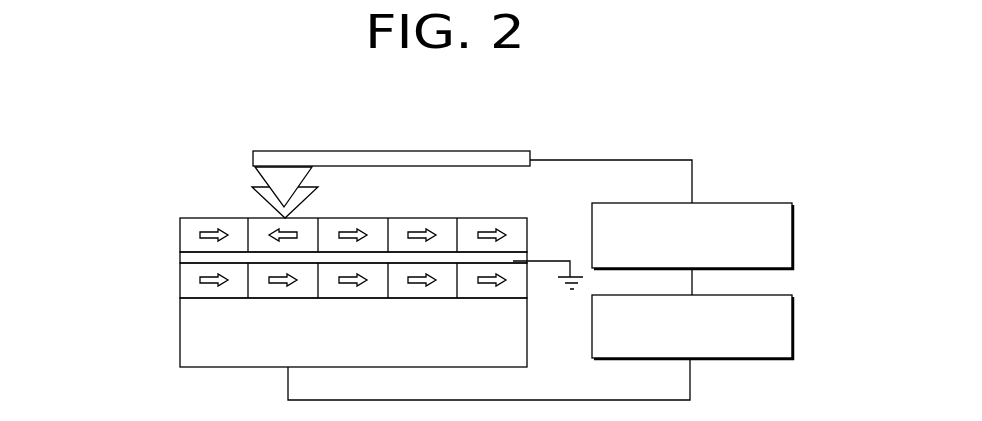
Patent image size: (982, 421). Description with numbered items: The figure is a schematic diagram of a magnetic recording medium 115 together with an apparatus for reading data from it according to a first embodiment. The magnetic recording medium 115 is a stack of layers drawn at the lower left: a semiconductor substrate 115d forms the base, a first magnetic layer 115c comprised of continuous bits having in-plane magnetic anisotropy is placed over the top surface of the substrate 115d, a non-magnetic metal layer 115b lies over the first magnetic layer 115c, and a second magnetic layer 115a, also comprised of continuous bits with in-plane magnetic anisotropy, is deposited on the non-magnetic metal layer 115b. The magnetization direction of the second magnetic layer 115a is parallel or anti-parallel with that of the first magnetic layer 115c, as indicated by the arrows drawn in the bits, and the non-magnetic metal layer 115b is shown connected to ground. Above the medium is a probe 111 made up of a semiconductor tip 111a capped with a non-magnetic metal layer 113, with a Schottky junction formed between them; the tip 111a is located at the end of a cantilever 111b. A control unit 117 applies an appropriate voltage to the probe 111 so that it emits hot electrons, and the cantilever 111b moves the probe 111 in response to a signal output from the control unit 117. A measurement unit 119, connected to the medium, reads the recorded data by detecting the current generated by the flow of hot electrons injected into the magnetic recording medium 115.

The probe 111 is at (341, 154).
The semiconductor tip 111a is at (297, 180).
The cantilever 111b is at (335, 157).
The non-magnetic metal layer 113 is at (256, 196).
The magnetic recording medium 115 is at (280, 286).
The second magnetic layer 115a is at (180, 233).
The non-magnetic metal layer 115b is at (180, 258).
The first magnetic layer 115c is at (180, 283).
The substrate 115d is at (180, 312).
The control unit 117 is at (793, 237).
The measurement unit 119 is at (792, 328).